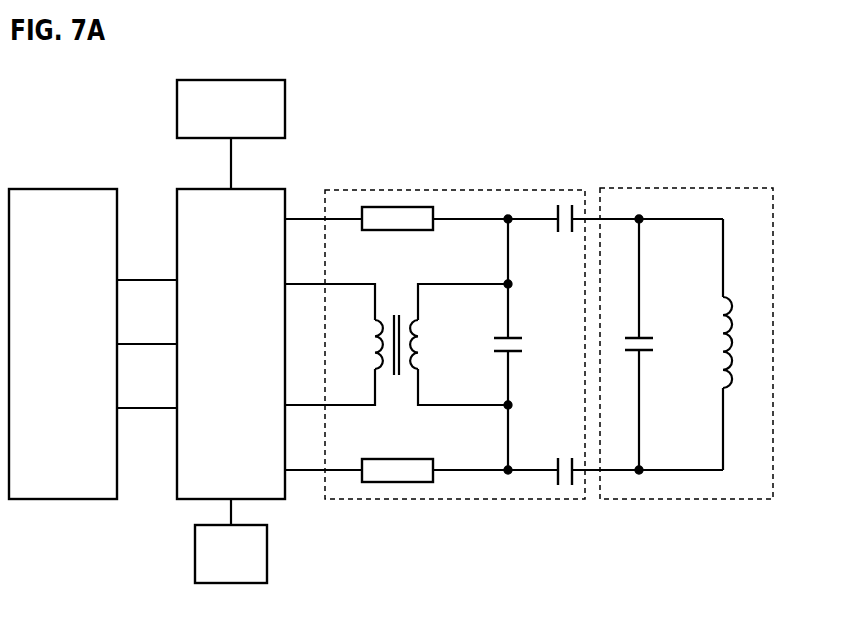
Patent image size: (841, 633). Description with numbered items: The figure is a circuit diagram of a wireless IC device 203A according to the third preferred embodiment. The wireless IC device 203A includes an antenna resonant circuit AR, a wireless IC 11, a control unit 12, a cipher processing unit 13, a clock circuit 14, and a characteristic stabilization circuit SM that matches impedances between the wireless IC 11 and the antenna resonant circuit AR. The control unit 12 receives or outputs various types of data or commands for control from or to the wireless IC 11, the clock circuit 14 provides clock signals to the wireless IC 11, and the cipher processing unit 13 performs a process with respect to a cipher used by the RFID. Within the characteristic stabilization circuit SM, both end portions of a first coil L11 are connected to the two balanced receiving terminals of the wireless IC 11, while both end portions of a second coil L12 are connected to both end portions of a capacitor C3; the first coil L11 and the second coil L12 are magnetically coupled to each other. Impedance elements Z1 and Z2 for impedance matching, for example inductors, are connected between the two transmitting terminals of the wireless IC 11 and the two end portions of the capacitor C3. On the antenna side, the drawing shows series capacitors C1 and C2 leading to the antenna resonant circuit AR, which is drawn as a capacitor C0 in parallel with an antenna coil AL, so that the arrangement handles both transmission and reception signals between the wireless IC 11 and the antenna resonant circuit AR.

The wireless IC 11 is at (285, 188).
The control unit 12 is at (62, 188).
The cipher processing unit 13 is at (285, 80).
The clock circuit 14 is at (267, 583).
The wireless IC device 203A is at (708, 96).
The characteristic stabilization circuit SM is at (467, 190).
The antenna resonant circuit AR is at (744, 188).
The impedance element Z1 is at (398, 207).
The impedance element Z2 is at (396, 483).
The first coil L11 is at (372, 345).
The second coil L12 is at (431, 344).
The capacitor C1 is at (565, 234).
The capacitor C2 is at (565, 456).
The capacitor C3 is at (524, 345).
The antenna capacitor C0 is at (654, 345).
The antenna coil AL is at (741, 342).